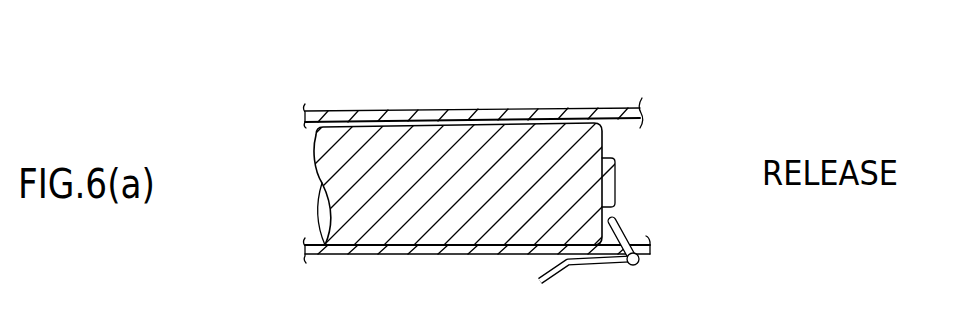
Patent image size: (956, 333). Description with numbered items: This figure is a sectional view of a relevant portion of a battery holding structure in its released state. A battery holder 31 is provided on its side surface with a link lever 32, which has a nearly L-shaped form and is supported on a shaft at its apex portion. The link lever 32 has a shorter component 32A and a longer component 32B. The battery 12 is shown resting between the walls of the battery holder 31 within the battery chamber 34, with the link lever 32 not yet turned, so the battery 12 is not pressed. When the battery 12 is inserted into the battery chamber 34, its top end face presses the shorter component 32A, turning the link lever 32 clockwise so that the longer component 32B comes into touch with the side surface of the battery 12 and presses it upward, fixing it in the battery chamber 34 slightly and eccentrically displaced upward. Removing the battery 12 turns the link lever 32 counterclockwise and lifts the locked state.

The battery 12 is at (422, 138).
The battery holder 31 is at (552, 108).
The link lever 32 is at (623, 271).
The shorter component 32A is at (619, 223).
The longer component 32B is at (646, 295).
The battery chamber 34 is at (613, 135).